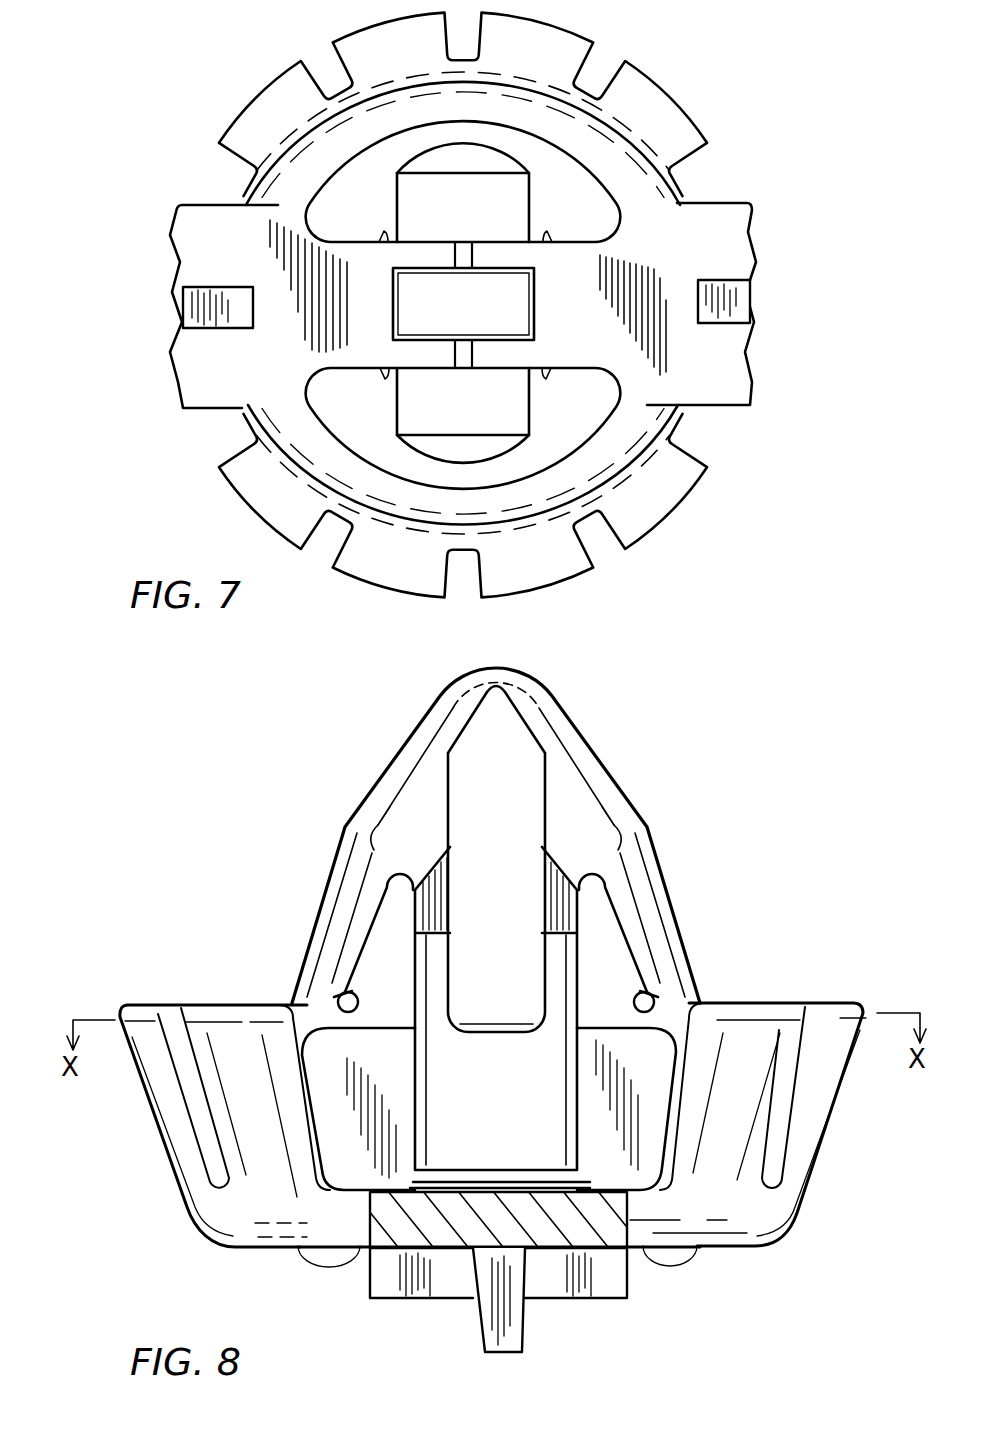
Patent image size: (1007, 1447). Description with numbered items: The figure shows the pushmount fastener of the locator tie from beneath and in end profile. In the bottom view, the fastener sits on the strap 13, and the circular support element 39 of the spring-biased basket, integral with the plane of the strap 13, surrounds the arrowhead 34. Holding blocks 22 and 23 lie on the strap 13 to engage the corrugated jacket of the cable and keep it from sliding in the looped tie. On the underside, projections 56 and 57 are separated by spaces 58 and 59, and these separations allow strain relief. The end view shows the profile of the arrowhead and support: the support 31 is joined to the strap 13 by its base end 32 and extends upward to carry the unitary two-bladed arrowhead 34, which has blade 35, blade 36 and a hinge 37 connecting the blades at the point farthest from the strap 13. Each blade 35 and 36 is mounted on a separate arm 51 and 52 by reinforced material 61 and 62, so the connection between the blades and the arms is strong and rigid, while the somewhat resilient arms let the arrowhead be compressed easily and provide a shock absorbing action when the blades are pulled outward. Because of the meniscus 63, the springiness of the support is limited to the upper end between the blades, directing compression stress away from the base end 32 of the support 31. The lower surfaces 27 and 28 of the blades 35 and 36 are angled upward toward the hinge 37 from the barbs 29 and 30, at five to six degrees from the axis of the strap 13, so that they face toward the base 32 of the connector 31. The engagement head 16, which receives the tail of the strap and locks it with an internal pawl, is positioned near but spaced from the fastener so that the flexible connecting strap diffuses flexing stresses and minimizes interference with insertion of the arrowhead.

In FIG. 8, the strap 13 is at (603, 1218).
In FIG. 8, the engagement head 16 is at (647, 1092).
In FIG. 7, the holding block 22 is at (193, 303).
In FIG. 7, the holding block 23 is at (742, 300).
In FIG. 8, the holding block 23 is at (545, 1283).
In FIG. 7, the lower surface 27 is at (473, 447).
In FIG. 8, the lower surface 27 is at (503, 1070).
In FIG. 7, the lower surface 28 is at (488, 165).
In FIG. 8, the lower surface 28 is at (352, 975).
In FIG. 8, the barb 29 is at (707, 1000).
In FIG. 8, the barb 30 is at (294, 1003).
In FIG. 8, the support 31 is at (567, 877).
In FIG. 8, the base end 32 is at (487, 1163).
In FIG. 8, the arrowhead 34 is at (410, 775).
In FIG. 7, the blade 35 is at (447, 163).
In FIG. 8, the blade 35 is at (587, 780).
In FIG. 7, the blade 36 is at (497, 440).
In FIG. 8, the blade 36 is at (370, 847).
In FIG. 8, the hinge 37 is at (505, 673).
In FIG. 7, the circular support element 39 is at (320, 432).
In FIG. 8, the circular support element 39 is at (755, 1210).
In FIG. 8, the arm 51 is at (580, 935).
In FIG. 8, the arm 52 is at (423, 920).
In FIG. 7, the projection 56 is at (546, 305).
In FIG. 7, the projection 57 is at (378, 298).
In FIG. 7, the space 58 is at (463, 243).
In FIG. 7, the space 59 is at (470, 350).
In FIG. 8, the reinforced material 61 is at (563, 842).
In FIG. 8, the reinforced material 62 is at (415, 858).
In FIG. 8, the meniscus 63 is at (585, 955).